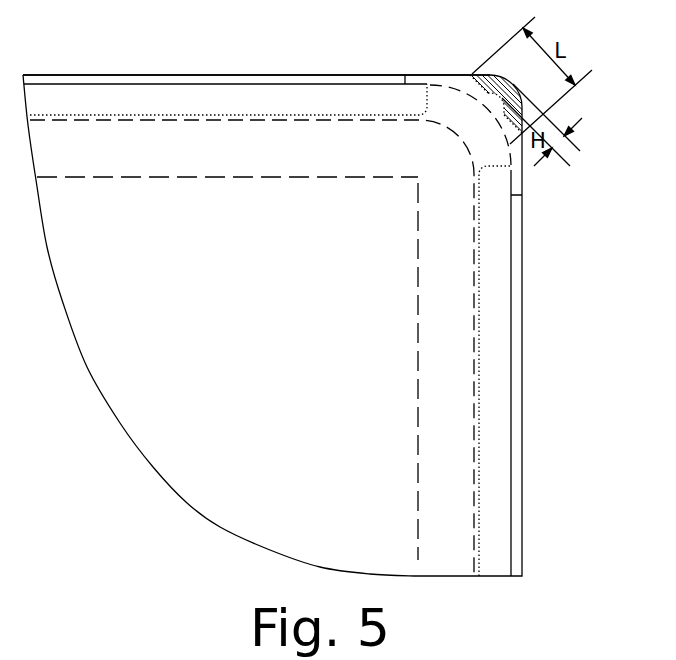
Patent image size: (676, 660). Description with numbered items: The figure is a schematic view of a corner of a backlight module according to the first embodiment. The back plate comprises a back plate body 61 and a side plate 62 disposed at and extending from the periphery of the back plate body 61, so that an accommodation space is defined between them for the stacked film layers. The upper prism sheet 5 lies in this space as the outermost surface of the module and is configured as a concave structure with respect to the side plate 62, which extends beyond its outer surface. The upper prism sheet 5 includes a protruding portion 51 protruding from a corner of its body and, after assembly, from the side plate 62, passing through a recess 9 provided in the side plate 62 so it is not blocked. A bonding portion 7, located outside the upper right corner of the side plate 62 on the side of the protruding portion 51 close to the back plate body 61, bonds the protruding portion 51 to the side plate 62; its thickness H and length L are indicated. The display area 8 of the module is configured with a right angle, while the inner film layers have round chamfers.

The upper prism sheet 5 is at (213, 112).
The back plate body 61 is at (277, 100).
The side plate 62 is at (338, 80).
The recess 9 is at (413, 78).
The protruding portion 51 is at (460, 75).
The bonding portion 7 is at (503, 100).
The display area 8 is at (421, 360).